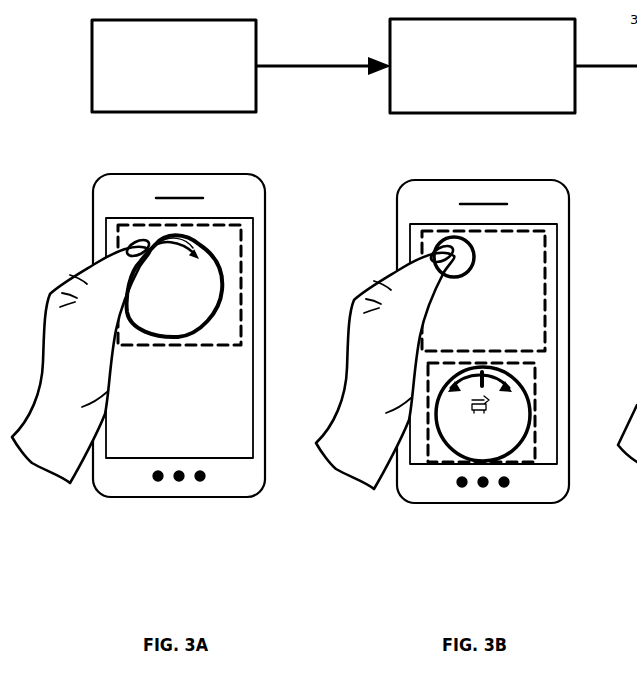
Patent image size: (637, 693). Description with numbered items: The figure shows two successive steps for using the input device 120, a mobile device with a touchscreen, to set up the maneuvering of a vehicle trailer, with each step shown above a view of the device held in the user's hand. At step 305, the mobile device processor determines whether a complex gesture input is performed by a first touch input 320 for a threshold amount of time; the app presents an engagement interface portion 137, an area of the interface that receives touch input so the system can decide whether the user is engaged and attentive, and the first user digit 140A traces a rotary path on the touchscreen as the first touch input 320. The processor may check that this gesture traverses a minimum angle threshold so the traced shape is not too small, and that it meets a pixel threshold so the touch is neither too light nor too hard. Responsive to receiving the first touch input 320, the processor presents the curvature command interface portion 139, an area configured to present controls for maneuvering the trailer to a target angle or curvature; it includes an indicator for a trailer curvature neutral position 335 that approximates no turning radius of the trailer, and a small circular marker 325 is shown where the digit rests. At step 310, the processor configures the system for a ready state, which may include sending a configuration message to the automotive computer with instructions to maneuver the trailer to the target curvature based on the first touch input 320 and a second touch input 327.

In FIG. 3A, the step of determining complex gesture input 305 is at (92, 34).
In FIG. 3B, the step of configuring ready state 310 is at (390, 34).
In FIG. 3A, the input device 120 is at (100, 182).
In FIG. 3B, the input device 120 is at (404, 188).
In FIG. 3A, the first user digit 140A is at (118, 252).
In FIG. 3B, the first user digit 140A is at (422, 258).
In FIG. 3A, the engagement interface portion 137 is at (158, 268).
In FIG. 3A, the first touch input 320 is at (178, 341).
In FIG. 3B, the touch indicator 325 is at (476, 257).
In FIG. 3B, the trailer curvature neutral position 335 is at (482, 384).
In FIG. 3B, the second touch input 327 is at (533, 385).
In FIG. 3B, the curvature command interface portion 139 is at (535, 410).